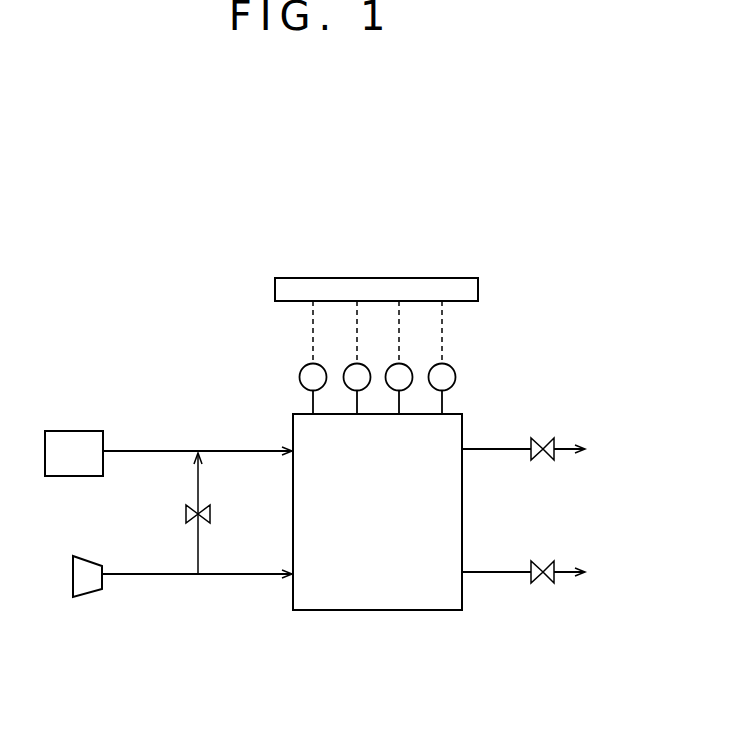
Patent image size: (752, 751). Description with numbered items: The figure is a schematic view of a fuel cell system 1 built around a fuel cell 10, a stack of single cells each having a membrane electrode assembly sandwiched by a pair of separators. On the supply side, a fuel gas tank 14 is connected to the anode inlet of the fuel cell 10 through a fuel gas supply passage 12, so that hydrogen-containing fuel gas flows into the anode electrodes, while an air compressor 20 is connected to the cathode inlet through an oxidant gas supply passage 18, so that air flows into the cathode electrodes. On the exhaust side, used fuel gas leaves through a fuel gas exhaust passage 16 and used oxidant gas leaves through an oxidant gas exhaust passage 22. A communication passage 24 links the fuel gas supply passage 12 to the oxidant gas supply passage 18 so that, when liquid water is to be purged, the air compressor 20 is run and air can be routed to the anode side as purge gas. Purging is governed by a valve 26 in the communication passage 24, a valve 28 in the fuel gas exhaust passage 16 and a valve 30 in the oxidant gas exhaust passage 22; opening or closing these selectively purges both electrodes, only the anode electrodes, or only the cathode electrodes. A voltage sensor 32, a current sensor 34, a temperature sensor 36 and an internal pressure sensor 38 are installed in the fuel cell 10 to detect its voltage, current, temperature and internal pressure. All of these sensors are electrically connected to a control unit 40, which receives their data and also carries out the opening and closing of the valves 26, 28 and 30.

The fuel cell system 1 is at (431, 173).
The fuel cell 10 is at (411, 610).
The fuel gas supply passage 12 is at (243, 450).
The fuel gas tank 14 is at (78, 431).
The fuel gas exhaust passage 16 is at (496, 449).
The oxidant gas supply passage 18 is at (242, 575).
The air compressor 20 is at (88, 560).
The oxidant gas exhaust passage 22 is at (494, 573).
The communication passage 24 is at (199, 548).
The valve 26 is at (210, 514).
The valve 28 is at (538, 442).
The valve 30 is at (538, 565).
The voltage sensor 32 is at (365, 368).
The current sensor 34 is at (322, 368).
The temperature sensor 36 is at (450, 368).
The internal pressure sensor 38 is at (407, 368).
The control unit 40 is at (372, 278).